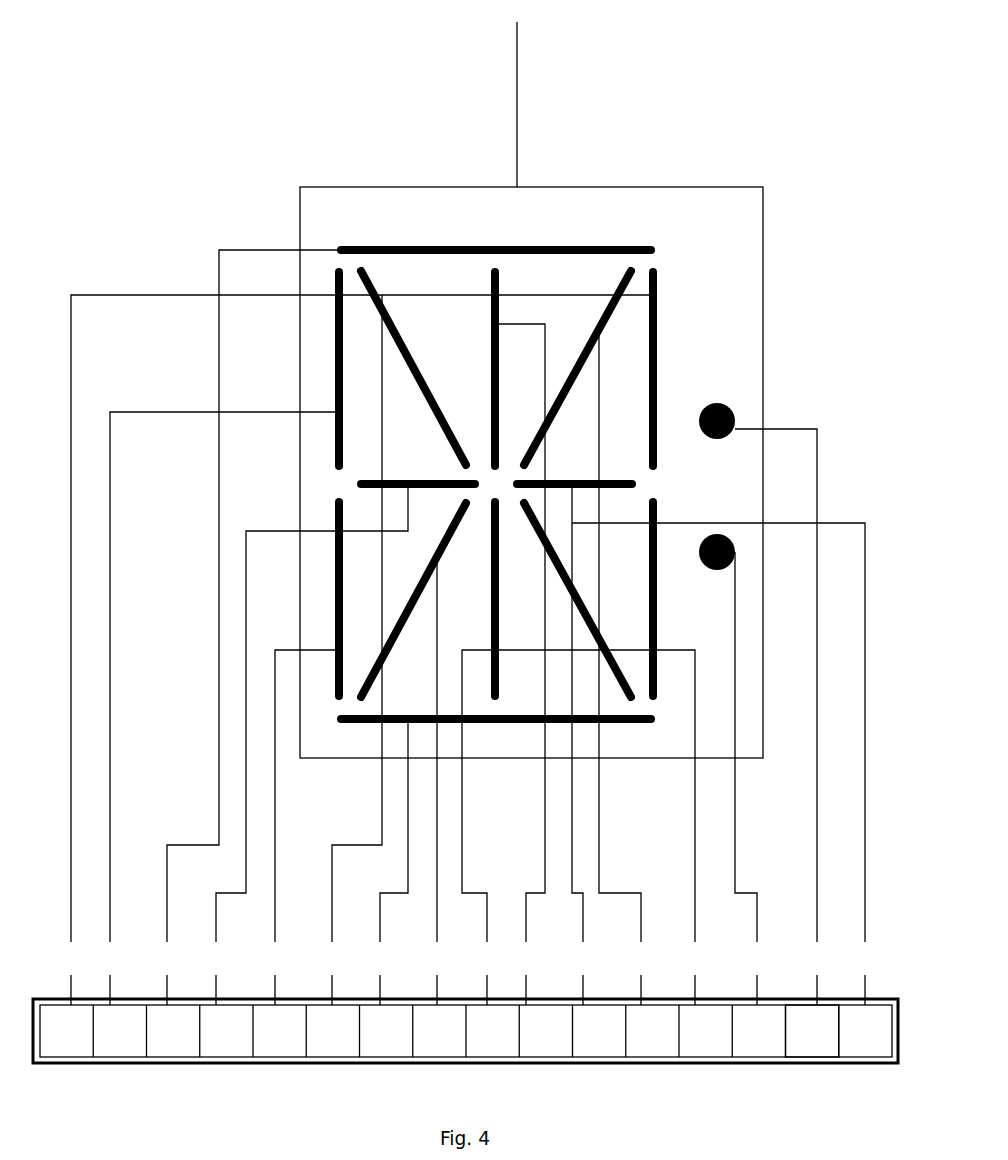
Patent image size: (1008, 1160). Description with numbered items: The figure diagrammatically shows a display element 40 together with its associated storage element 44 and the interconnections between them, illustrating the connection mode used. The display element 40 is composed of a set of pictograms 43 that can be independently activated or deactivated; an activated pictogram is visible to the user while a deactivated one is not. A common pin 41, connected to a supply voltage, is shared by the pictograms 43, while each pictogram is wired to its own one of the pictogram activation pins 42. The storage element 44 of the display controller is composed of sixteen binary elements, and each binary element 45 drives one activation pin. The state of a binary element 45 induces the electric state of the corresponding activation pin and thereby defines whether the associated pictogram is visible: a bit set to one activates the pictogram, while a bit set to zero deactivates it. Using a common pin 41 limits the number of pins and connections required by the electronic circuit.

The display element 40 is at (772, 83).
The common pin 41 is at (549, 35).
The pictogram activation pins 42 is at (137, 155).
The pictograms 43 is at (457, 244).
The storage element 44 is at (410, 1063).
The binary element 45 is at (815, 1028).